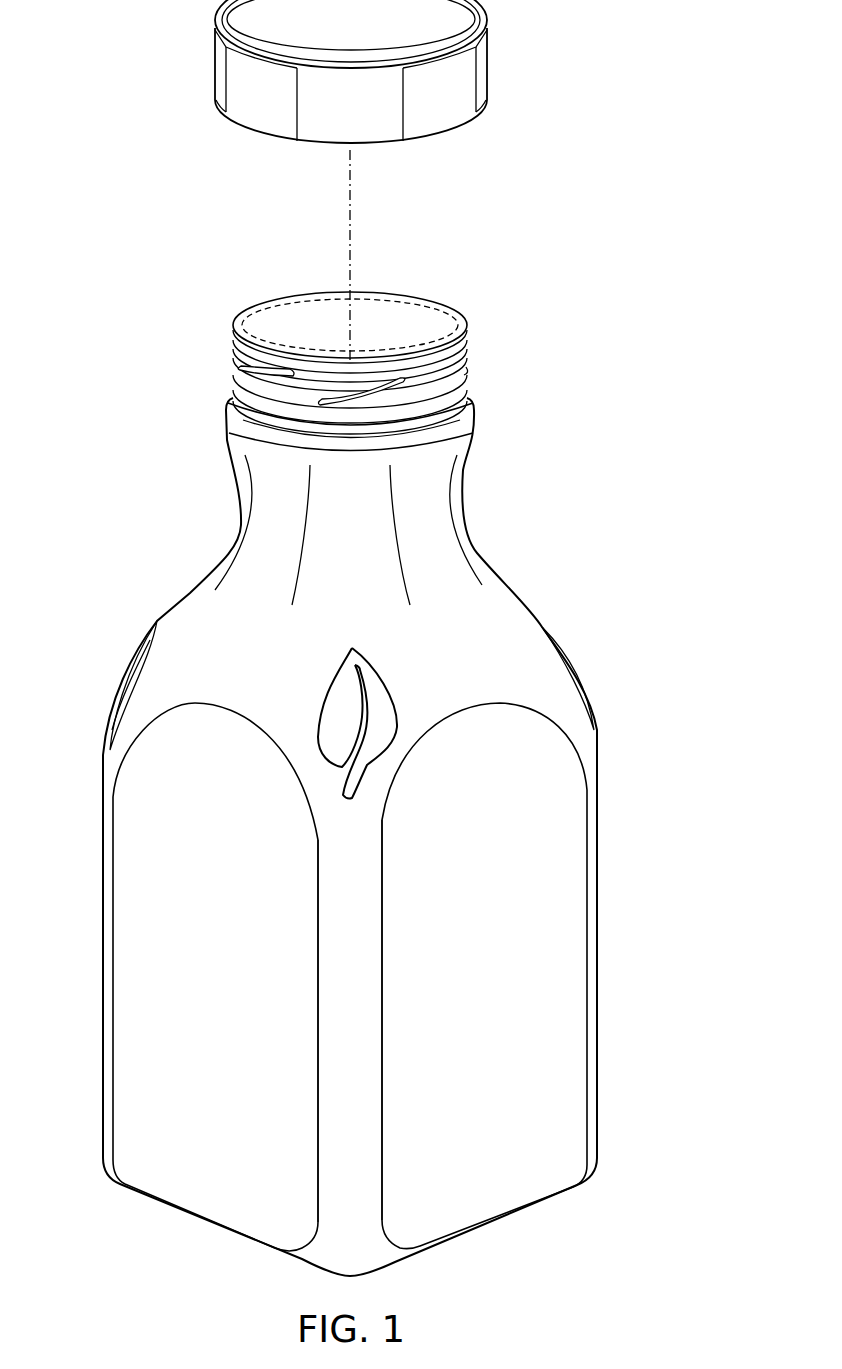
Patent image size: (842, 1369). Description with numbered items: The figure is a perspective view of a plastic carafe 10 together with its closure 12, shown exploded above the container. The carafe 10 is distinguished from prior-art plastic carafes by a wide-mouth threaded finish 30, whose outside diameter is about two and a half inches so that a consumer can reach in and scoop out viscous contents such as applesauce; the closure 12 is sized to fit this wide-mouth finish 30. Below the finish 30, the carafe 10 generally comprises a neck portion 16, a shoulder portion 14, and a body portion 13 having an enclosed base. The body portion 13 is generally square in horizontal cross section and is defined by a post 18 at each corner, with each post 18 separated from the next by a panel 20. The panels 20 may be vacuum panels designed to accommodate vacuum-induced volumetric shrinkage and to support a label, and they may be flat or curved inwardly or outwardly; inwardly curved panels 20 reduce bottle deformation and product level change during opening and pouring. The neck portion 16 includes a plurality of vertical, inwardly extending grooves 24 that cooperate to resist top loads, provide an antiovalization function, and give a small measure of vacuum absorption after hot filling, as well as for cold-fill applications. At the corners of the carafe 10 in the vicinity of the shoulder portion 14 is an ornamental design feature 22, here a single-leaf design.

The plastic carafe 10 is at (586, 645).
The closure 12 is at (497, 70).
The body portion 13 is at (606, 1060).
The shoulder portion 14 is at (123, 643).
The neck portion 16 is at (336, 544).
The post 18 is at (330, 1080).
The panel 20 is at (120, 930).
The ornamental design feature 22 is at (328, 710).
The inwardly extending groove 24 is at (250, 534).
The wide-mouth threaded finish 30 is at (229, 352).